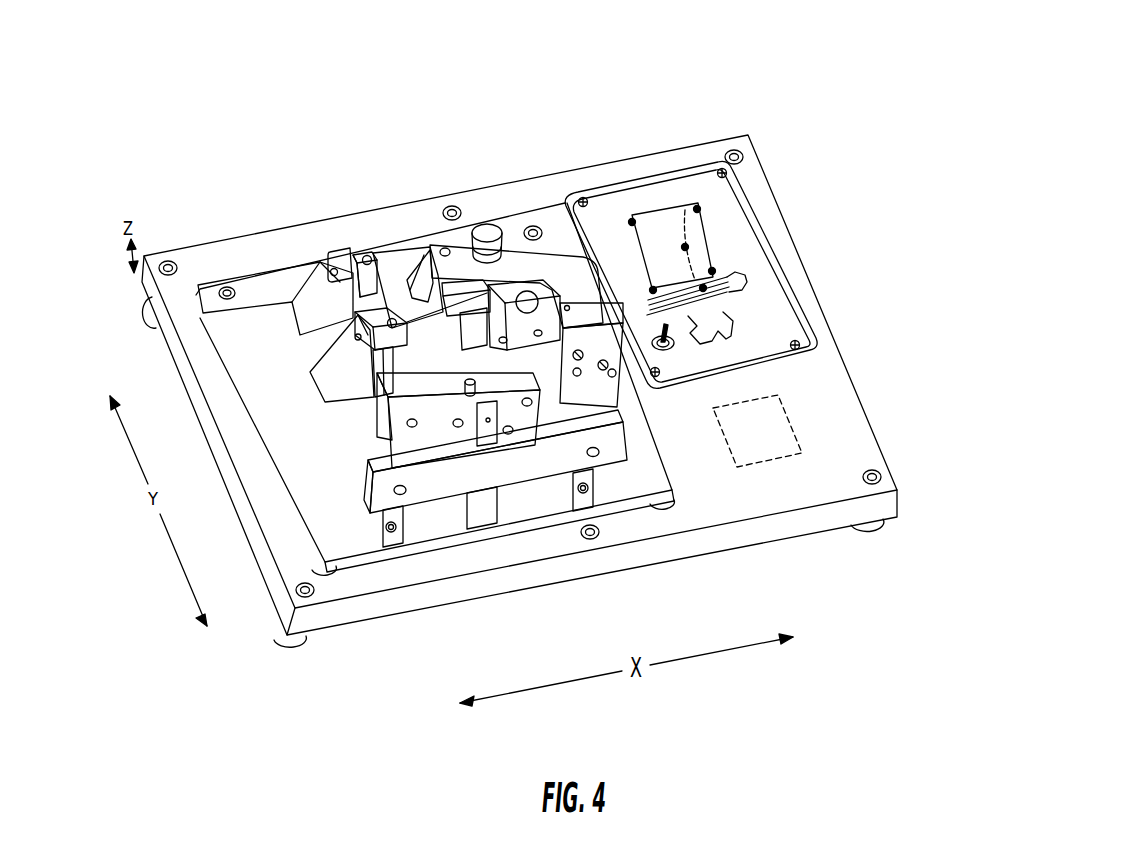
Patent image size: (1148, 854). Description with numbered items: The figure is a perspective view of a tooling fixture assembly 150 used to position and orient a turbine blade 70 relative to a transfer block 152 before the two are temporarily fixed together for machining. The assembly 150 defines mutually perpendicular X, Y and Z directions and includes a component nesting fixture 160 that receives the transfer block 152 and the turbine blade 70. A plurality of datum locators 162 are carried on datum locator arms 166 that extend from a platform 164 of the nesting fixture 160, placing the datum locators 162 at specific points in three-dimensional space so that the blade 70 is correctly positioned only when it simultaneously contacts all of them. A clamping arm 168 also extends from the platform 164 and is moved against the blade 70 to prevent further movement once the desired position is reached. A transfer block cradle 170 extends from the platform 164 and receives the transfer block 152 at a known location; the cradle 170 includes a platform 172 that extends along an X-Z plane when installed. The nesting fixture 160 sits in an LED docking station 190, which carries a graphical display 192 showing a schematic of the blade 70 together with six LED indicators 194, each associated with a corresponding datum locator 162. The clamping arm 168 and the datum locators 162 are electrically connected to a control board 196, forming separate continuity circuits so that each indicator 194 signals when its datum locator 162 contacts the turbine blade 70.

The tooling fixture assembly 150 is at (685, 90).
The turbine blade 70 is at (392, 263).
The transfer block 152 is at (470, 366).
The component nesting fixture 160 is at (302, 518).
The datum locators 162 is at (357, 256).
The platform 164 is at (295, 477).
The datum locator arms 166 is at (322, 262).
The clamping arm 168 is at (537, 258).
The transfer block cradle 170 is at (432, 398).
The platform 172 is at (353, 387).
The LED docking station 190 is at (832, 384).
The graphical display 192 is at (770, 278).
The LED indicators 194 is at (712, 270).
The control board 196 is at (763, 462).